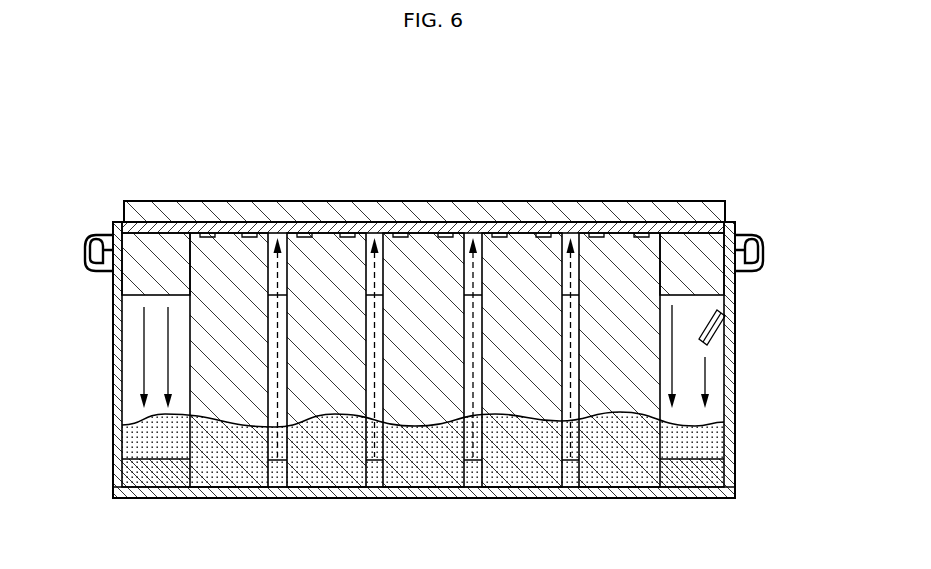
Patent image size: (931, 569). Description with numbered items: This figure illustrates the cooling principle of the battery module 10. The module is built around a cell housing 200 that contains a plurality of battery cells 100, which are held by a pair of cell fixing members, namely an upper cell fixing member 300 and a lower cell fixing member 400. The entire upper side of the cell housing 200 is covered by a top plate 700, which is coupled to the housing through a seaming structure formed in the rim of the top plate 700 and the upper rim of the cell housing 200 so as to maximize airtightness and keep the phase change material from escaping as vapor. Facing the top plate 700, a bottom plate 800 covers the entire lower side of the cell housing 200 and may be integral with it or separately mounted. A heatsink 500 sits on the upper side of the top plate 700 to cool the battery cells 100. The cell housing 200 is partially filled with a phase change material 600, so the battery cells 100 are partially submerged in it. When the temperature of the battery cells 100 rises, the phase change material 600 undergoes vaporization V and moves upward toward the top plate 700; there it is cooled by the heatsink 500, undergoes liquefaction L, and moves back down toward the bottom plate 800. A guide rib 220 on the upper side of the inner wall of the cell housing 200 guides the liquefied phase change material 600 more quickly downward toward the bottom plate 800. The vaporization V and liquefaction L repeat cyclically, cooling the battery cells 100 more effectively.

The battery module 10 is at (167, 129).
The battery cell 100 is at (525, 260).
The cell housing 200 is at (737, 380).
The guide rib 220 is at (720, 330).
The upper cell fixing member 300 is at (143, 278).
The lower cell fixing member 400 is at (143, 472).
The heatsink 500 is at (720, 210).
The phase change material 600 is at (705, 440).
The top plate 700 is at (735, 233).
The bottom plate 800 is at (660, 498).
The liquefaction L is at (145, 352).
The vaporization V is at (280, 367).